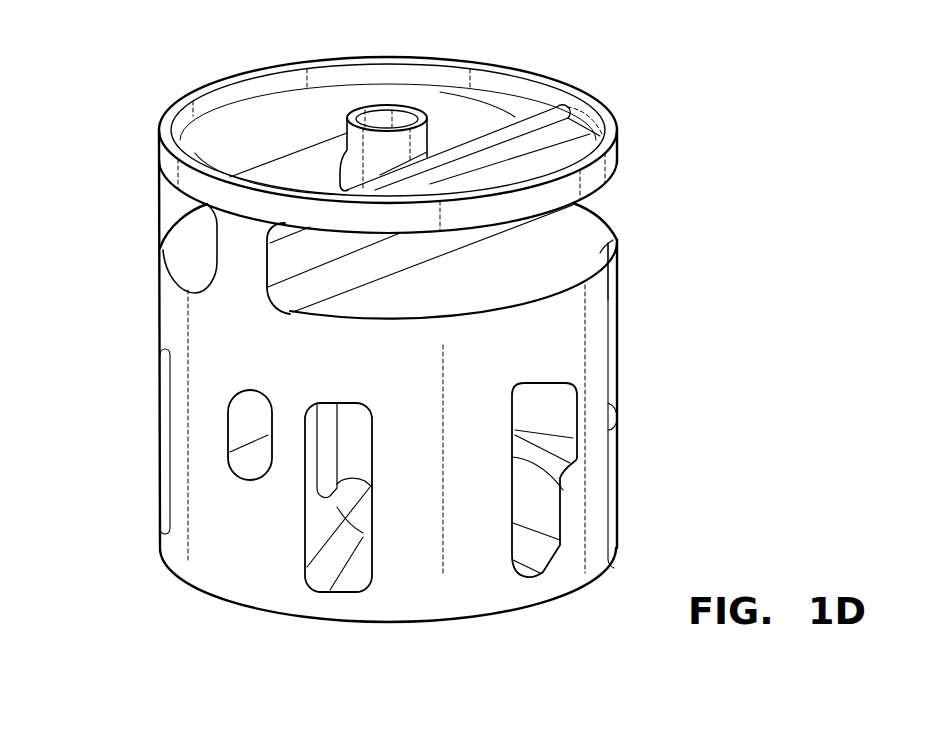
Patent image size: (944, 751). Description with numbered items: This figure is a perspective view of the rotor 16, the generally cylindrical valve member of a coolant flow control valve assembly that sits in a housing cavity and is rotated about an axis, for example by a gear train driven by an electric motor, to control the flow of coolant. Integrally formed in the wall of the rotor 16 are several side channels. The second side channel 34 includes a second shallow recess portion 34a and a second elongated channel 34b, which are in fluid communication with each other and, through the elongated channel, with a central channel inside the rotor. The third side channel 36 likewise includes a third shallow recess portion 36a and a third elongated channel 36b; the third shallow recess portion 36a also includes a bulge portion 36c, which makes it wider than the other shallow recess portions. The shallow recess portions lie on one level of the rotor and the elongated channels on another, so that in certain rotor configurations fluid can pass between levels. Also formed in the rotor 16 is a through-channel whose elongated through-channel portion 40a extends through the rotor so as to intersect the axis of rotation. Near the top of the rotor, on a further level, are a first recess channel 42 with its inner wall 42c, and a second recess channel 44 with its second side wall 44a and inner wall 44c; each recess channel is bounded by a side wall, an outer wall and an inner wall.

The rotor 16 is at (138, 88).
The first recess channel 42 is at (172, 212).
The inner wall 42c is at (177, 243).
The second recess channel 44 is at (620, 198).
The inner wall 44c is at (600, 253).
The second side wall 44a is at (283, 266).
The elongated through-channel portion 40a is at (242, 413).
The second side channel 34 is at (353, 572).
The second shallow recess portion 34a is at (346, 433).
The second elongated channel 34b is at (322, 569).
The third side channel 36 is at (575, 491).
The third shallow recess portion 36a is at (533, 395).
The third elongated channel 36b is at (543, 543).
The bulge portion 36c is at (574, 418).